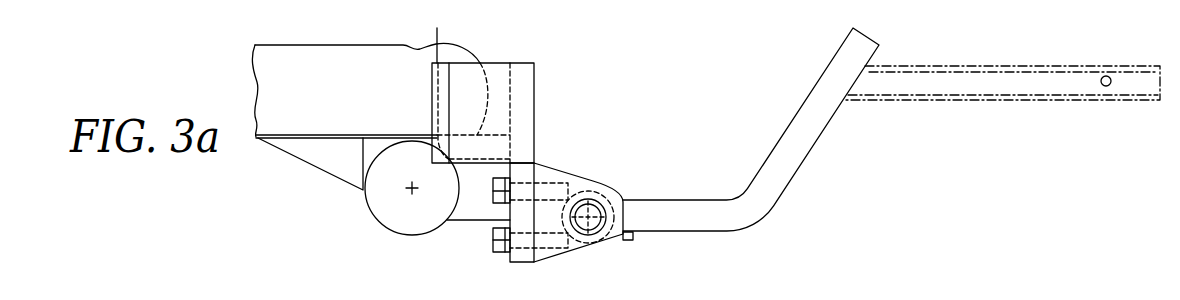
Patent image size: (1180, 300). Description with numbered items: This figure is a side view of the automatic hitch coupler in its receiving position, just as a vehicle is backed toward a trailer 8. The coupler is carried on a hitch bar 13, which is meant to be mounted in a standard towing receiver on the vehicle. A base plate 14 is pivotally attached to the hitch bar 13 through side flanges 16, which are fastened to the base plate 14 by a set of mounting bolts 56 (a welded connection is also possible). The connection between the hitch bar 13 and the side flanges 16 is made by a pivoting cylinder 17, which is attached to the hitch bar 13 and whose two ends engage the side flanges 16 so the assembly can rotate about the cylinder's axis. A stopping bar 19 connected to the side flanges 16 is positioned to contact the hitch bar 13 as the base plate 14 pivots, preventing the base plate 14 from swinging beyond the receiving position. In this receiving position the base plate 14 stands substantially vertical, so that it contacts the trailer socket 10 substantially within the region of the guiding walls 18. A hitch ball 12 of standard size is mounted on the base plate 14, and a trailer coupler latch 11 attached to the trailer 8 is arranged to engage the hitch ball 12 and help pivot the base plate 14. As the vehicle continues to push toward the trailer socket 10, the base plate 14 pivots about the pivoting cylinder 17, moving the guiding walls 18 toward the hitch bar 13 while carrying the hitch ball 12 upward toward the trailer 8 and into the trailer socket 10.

The trailer 8 is at (341, 97).
The trailer socket 10 is at (445, 46).
The trailer coupler latch 11 is at (333, 162).
The hitch ball 12 is at (406, 220).
The hitch bar 13 is at (815, 130).
The base plate 14 is at (525, 99).
The side flanges 16 is at (578, 180).
The pivoting cylinder 17 is at (588, 232).
The guiding walls 18 is at (496, 74).
The stopping bar 19 is at (633, 237).
The mounting bolts 56 is at (495, 247).